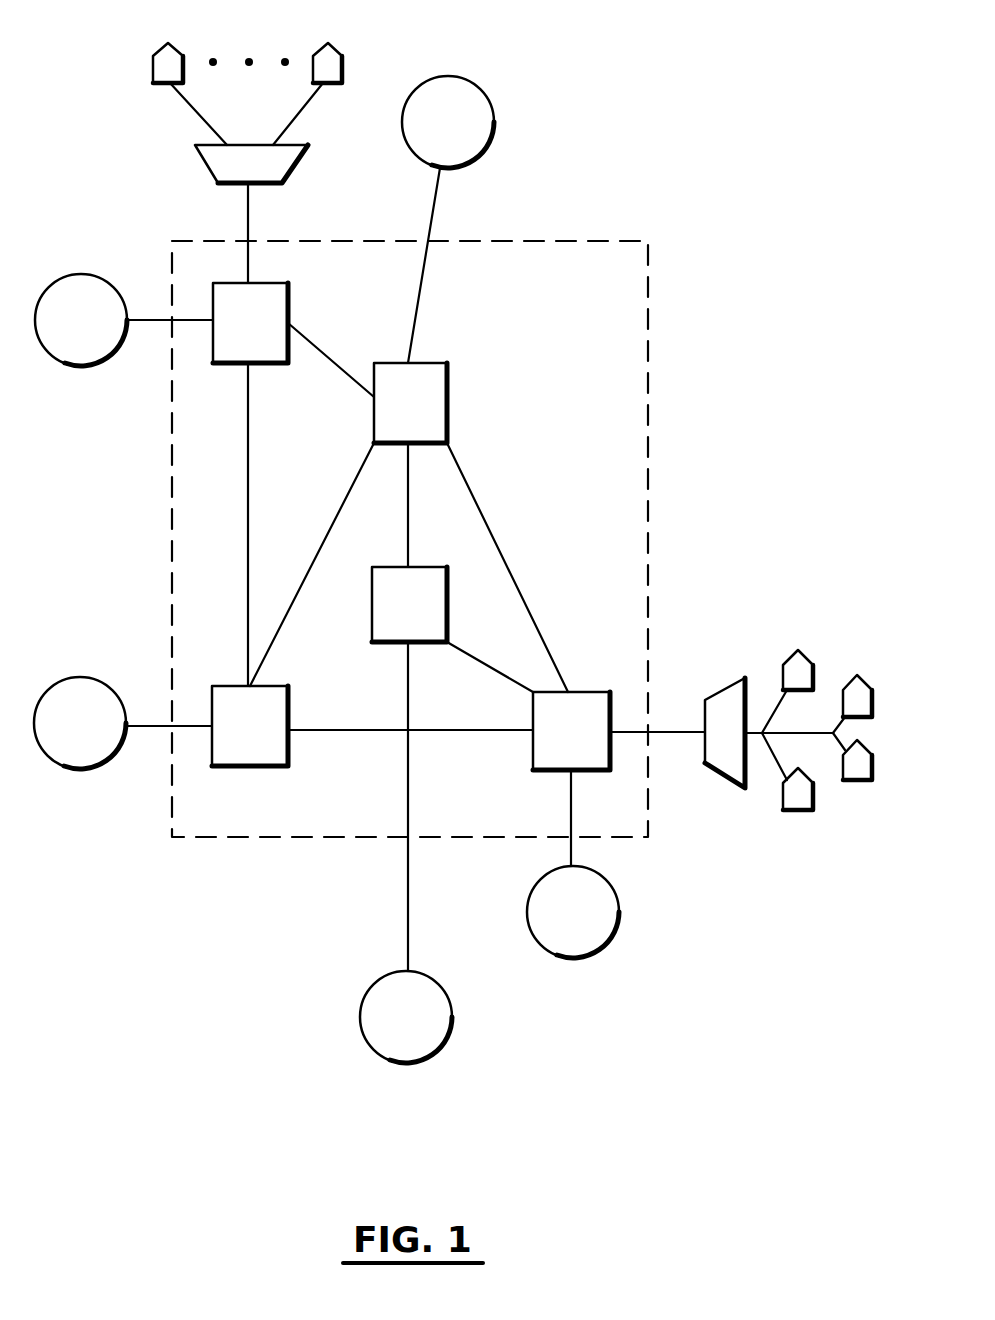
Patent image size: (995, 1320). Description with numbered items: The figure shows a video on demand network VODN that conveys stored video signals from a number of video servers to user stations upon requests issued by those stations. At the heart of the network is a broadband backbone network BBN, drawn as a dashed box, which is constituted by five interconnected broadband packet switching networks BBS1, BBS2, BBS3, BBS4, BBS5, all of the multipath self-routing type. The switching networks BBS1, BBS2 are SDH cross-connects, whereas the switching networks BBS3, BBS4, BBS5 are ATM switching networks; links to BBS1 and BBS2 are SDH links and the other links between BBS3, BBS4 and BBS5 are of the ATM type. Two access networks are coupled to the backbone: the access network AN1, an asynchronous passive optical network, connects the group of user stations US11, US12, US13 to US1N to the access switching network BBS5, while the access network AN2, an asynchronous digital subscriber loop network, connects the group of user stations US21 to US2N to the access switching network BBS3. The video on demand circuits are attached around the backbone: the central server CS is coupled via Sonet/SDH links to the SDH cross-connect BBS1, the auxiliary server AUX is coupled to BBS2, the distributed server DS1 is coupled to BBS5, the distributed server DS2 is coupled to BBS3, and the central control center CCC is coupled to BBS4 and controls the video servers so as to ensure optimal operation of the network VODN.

The video on demand network VODN is at (460, 603).
The broadband backbone network BBN is at (648, 407).
The broadband packet switching network BBS1 is at (447, 578).
The broadband packet switching network BBS2 is at (447, 378).
The broadband packet switching network BBS3 is at (288, 288).
The broadband packet switching network BBS4 is at (288, 693).
The broadband packet switching network BBS5 is at (582, 690).
The access network AN1 is at (712, 768).
The access network AN2 is at (297, 165).
The user station US11 is at (791, 653).
The user station US12 is at (855, 682).
The user station US13 is at (855, 777).
The user station US1N is at (793, 809).
The user station US21 is at (183, 41).
The user station US2N is at (307, 41).
The distributed server DS1 is at (621, 912).
The distributed server DS2 is at (80, 274).
The central server CS is at (453, 1015).
The central control center CCC is at (79, 677).
The auxiliary server AUX is at (441, 77).